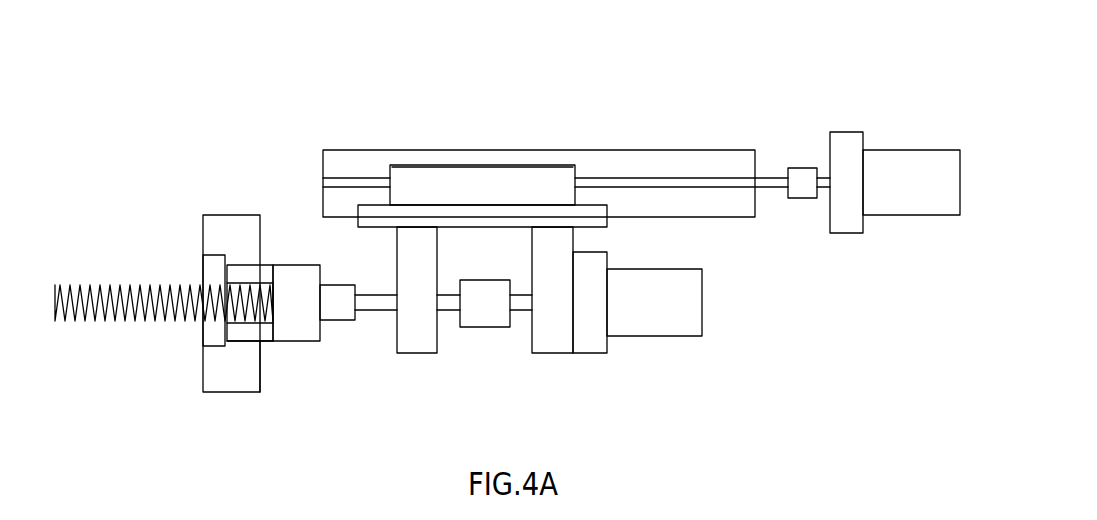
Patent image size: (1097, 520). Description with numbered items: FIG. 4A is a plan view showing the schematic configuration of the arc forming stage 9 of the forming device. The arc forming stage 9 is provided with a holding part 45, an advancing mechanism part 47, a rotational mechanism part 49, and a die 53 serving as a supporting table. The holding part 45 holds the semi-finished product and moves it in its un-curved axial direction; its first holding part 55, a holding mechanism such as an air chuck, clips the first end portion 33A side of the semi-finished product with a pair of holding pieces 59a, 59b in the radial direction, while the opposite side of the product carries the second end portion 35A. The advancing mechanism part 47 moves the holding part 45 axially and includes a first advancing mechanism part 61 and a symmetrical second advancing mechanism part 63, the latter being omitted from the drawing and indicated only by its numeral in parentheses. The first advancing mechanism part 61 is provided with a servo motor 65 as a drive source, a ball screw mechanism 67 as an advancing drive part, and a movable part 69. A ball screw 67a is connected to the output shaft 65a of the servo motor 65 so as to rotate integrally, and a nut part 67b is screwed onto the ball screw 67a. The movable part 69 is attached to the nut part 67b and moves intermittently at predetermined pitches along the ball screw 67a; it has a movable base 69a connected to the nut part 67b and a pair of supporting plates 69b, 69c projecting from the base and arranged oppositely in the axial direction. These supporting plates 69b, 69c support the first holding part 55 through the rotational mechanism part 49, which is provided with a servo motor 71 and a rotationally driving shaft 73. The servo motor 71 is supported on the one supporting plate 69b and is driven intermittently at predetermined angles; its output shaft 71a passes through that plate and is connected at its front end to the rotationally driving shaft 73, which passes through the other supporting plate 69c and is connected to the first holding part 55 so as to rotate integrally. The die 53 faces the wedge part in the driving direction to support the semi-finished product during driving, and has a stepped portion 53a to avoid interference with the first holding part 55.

The arc forming stage 9 is at (657, 78).
The advancing mechanism part 47 is at (467, 125).
The first advancing mechanism part 61 is at (558, 150).
The second advancing mechanism part 63 is at (539, 183).
The ball screw mechanism 67 is at (402, 165).
The nut part 67b is at (425, 175).
The ball screw 67a is at (727, 180).
The output shaft 65a is at (825, 178).
The servo motor 65 is at (922, 148).
The movable part 69 is at (552, 357).
The movable base 69a is at (583, 220).
The supporting plate 69b is at (560, 288).
The supporting plate 69c is at (428, 325).
The rotational mechanism part 49 is at (673, 343).
The servo motor 71 is at (670, 305).
The output shaft 71a is at (520, 303).
The rotationally driving shaft 73 is at (378, 305).
The die 53 is at (202, 367).
The stepped portion 53a is at (258, 375).
The second end portion 35A is at (52, 300).
The holding piece 59b is at (248, 273).
The holding piece 59a is at (243, 335).
The first holding part 55 is at (316, 342).
The holding part 45 is at (314, 279).
The first end portion 33A is at (273, 292).